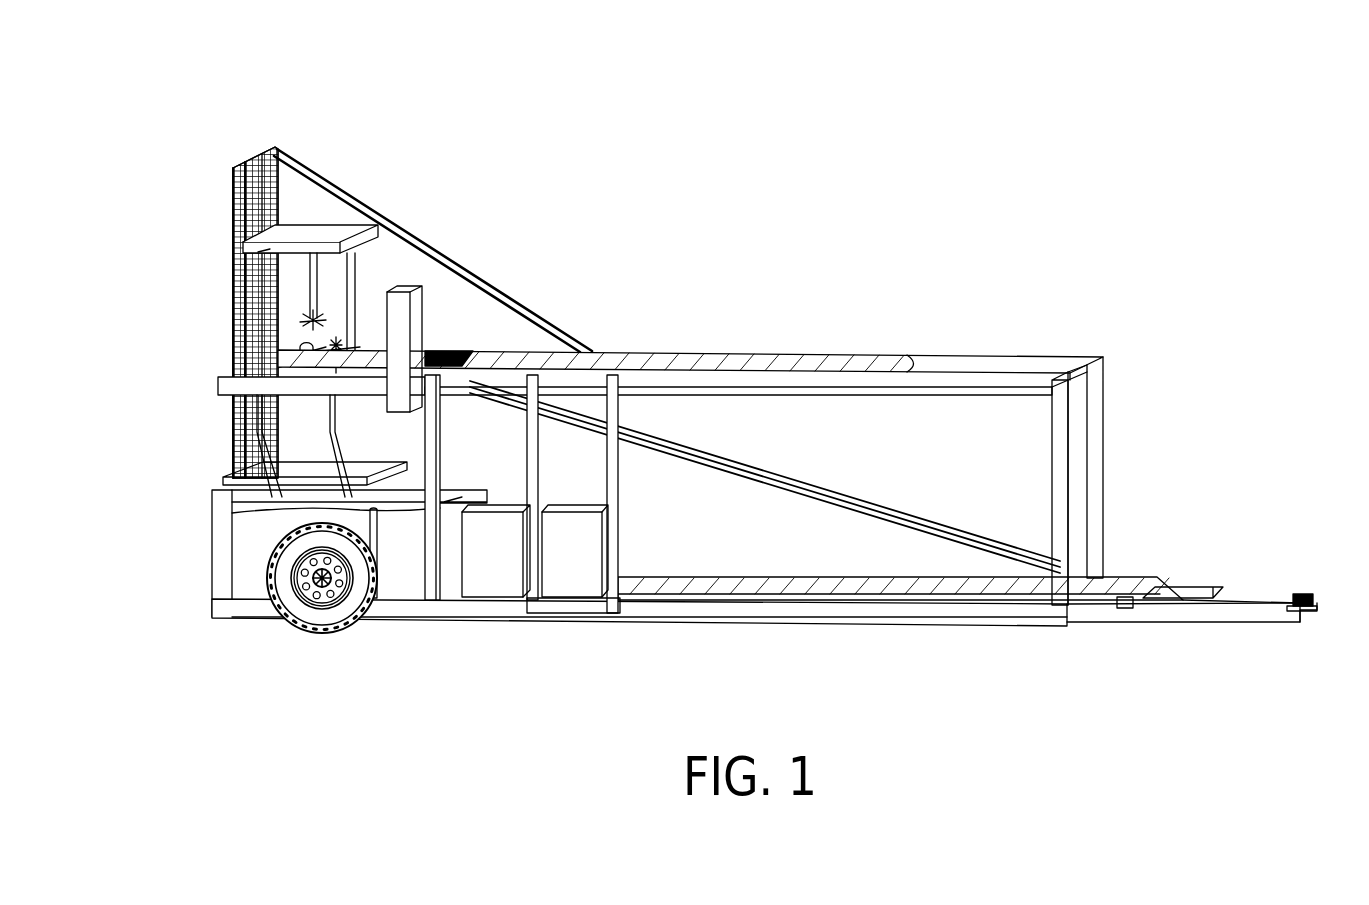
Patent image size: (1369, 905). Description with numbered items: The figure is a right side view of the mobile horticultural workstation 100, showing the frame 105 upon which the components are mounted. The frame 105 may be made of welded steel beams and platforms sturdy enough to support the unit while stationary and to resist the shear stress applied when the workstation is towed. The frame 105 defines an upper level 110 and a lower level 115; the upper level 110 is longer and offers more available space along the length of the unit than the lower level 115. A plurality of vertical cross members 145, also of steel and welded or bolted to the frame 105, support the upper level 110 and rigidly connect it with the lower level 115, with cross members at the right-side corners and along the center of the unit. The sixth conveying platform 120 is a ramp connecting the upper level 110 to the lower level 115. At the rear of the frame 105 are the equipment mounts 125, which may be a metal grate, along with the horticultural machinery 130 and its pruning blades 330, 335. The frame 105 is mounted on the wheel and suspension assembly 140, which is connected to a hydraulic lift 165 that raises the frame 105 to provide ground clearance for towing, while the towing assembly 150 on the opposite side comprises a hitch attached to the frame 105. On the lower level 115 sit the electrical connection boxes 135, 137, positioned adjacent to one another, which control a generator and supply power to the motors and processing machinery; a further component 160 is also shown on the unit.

The mobile horticultural workstation 100 is at (183, 108).
The frame 105 is at (723, 618).
The upper level 110 is at (980, 383).
The lower level 115 is at (920, 608).
The sixth conveying platform 120 is at (850, 497).
The equipment mounts 125 is at (237, 298).
The horticultural machinery 130 is at (237, 268).
The electrical connection box 135 is at (575, 570).
The electrical connection box 137 is at (495, 570).
The wheel and suspension assembly 140 is at (268, 572).
The vertical cross members 145 is at (607, 385).
The towing assembly 150 is at (1312, 596).
The control box 160 is at (417, 307).
The hydraulic lift 165 is at (368, 513).
The pruning blade 330 is at (363, 278).
The pruning blade 335 is at (320, 277).